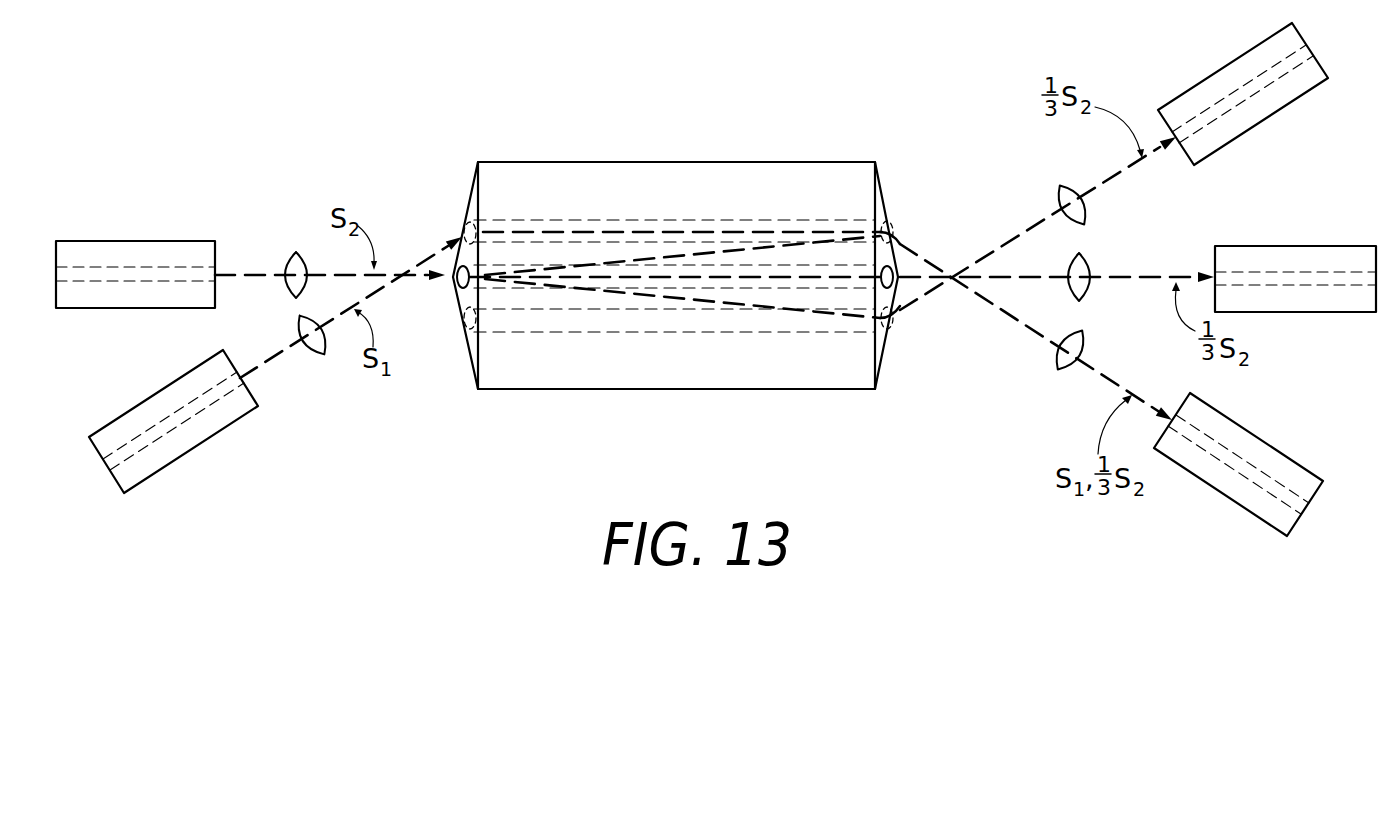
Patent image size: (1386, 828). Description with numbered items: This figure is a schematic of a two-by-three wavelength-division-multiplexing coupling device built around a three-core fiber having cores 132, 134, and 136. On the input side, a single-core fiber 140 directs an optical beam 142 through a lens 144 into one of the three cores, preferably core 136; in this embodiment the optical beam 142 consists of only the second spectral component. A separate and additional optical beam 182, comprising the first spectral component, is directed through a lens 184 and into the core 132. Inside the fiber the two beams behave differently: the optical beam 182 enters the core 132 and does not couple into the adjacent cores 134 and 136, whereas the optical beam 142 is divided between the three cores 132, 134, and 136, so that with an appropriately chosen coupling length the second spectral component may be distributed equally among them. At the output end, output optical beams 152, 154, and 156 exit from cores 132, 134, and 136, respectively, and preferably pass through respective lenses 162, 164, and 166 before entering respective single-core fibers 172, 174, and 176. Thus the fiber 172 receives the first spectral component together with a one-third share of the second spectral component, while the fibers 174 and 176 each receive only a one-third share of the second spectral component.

The single-core fiber 140 is at (125, 243).
The optical beam 142 is at (247, 272).
The lens 144 is at (298, 250).
The core 136 is at (462, 256).
The core 132 is at (465, 224).
The core 134 is at (462, 330).
The optical beam 182 is at (265, 367).
The lens 184 is at (307, 356).
The output optical beam 154 is at (1018, 238).
The lens 164 is at (1065, 185).
The output optical beam 156 is at (1122, 275).
The lens 166 is at (1086, 298).
The output optical beam 152 is at (992, 306).
The lens 162 is at (1067, 369).
The single-core fiber 174 is at (1240, 52).
The single-core fiber 176 is at (1280, 246).
The single-core fiber 172 is at (1268, 442).